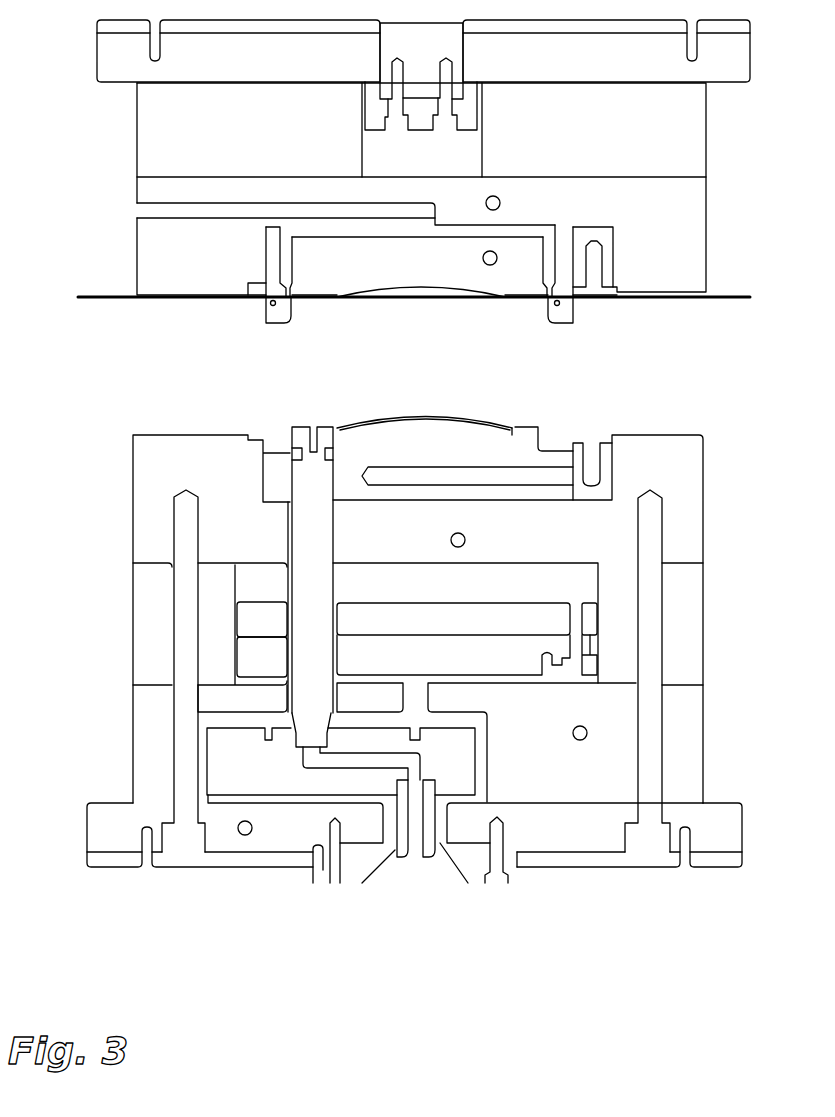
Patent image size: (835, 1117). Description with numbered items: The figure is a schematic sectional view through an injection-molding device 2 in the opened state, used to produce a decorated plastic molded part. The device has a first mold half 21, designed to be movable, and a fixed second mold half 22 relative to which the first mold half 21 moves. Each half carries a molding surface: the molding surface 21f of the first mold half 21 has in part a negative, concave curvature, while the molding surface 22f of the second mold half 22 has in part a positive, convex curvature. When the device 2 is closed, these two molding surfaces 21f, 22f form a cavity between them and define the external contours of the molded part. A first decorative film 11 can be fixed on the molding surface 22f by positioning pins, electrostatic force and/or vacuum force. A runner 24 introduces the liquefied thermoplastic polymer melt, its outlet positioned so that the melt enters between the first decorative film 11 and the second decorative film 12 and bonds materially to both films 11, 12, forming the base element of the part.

The injection-molding device 2 is at (758, 184).
The first mold half 21 is at (694, 132).
The molding surface of the first mold half 21f is at (430, 286).
The second decorative film 12 is at (716, 299).
The second mold half 22 is at (690, 478).
The molding surface of the second mold half 22f is at (474, 421).
The runner 24 is at (316, 431).
The first decorative film 11 is at (396, 420).